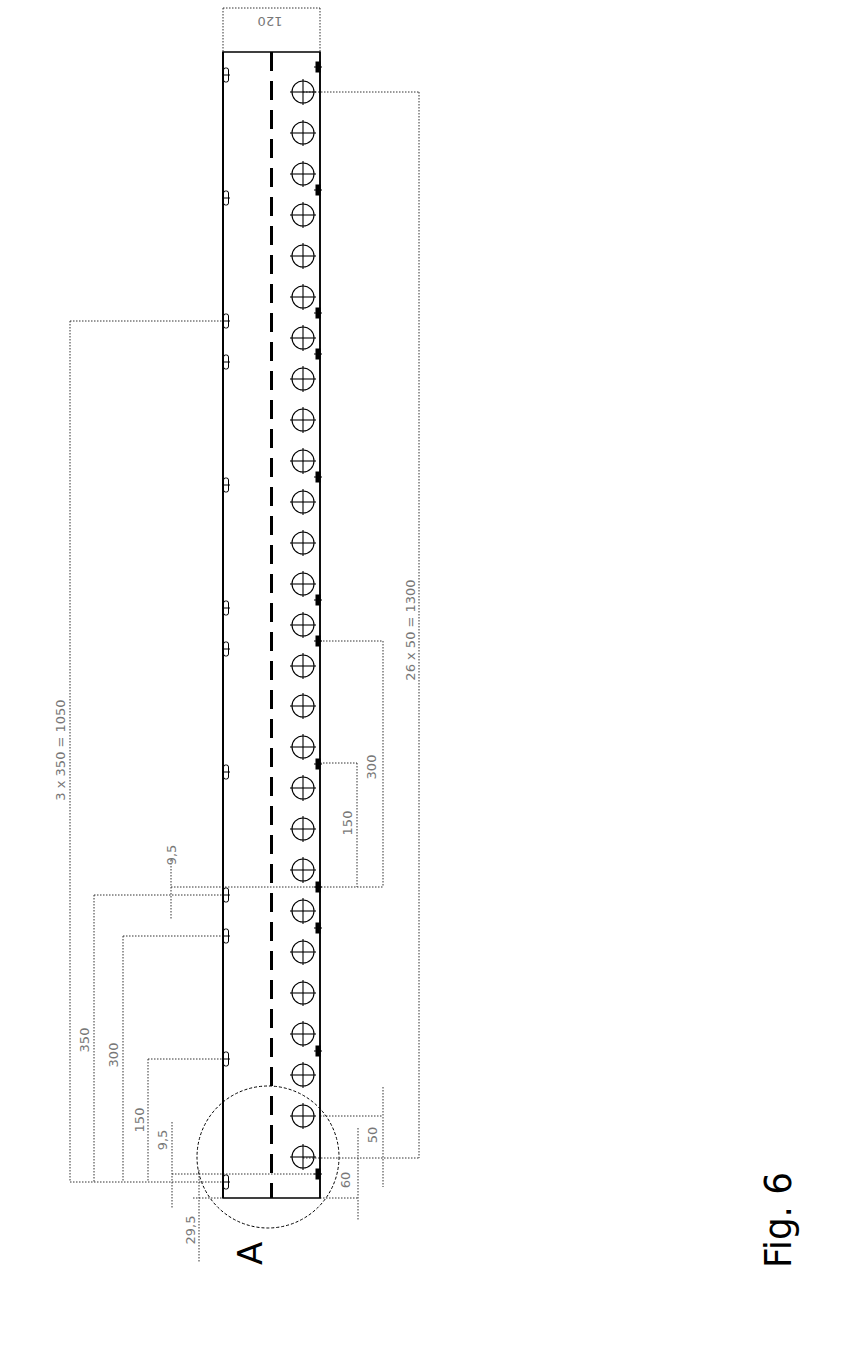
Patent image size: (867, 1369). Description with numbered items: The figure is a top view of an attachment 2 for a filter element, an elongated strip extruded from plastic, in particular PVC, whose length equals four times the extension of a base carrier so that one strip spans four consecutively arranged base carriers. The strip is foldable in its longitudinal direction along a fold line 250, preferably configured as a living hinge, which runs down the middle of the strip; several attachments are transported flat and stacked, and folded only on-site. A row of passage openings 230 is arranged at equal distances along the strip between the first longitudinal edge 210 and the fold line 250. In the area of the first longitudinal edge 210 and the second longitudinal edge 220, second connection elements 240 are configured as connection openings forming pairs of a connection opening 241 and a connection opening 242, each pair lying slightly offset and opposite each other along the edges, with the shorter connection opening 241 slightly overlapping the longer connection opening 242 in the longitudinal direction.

The attachment 2 is at (198, 297).
The first longitudinal edge 210 is at (320, 957).
The second longitudinal edge 220 is at (222, 820).
The passage openings 230 is at (306, 380).
The second connection elements 240 is at (202, 622).
The connection opening 241 is at (320, 477).
The connection opening 242 is at (224, 487).
The fold line 250 is at (268, 152).